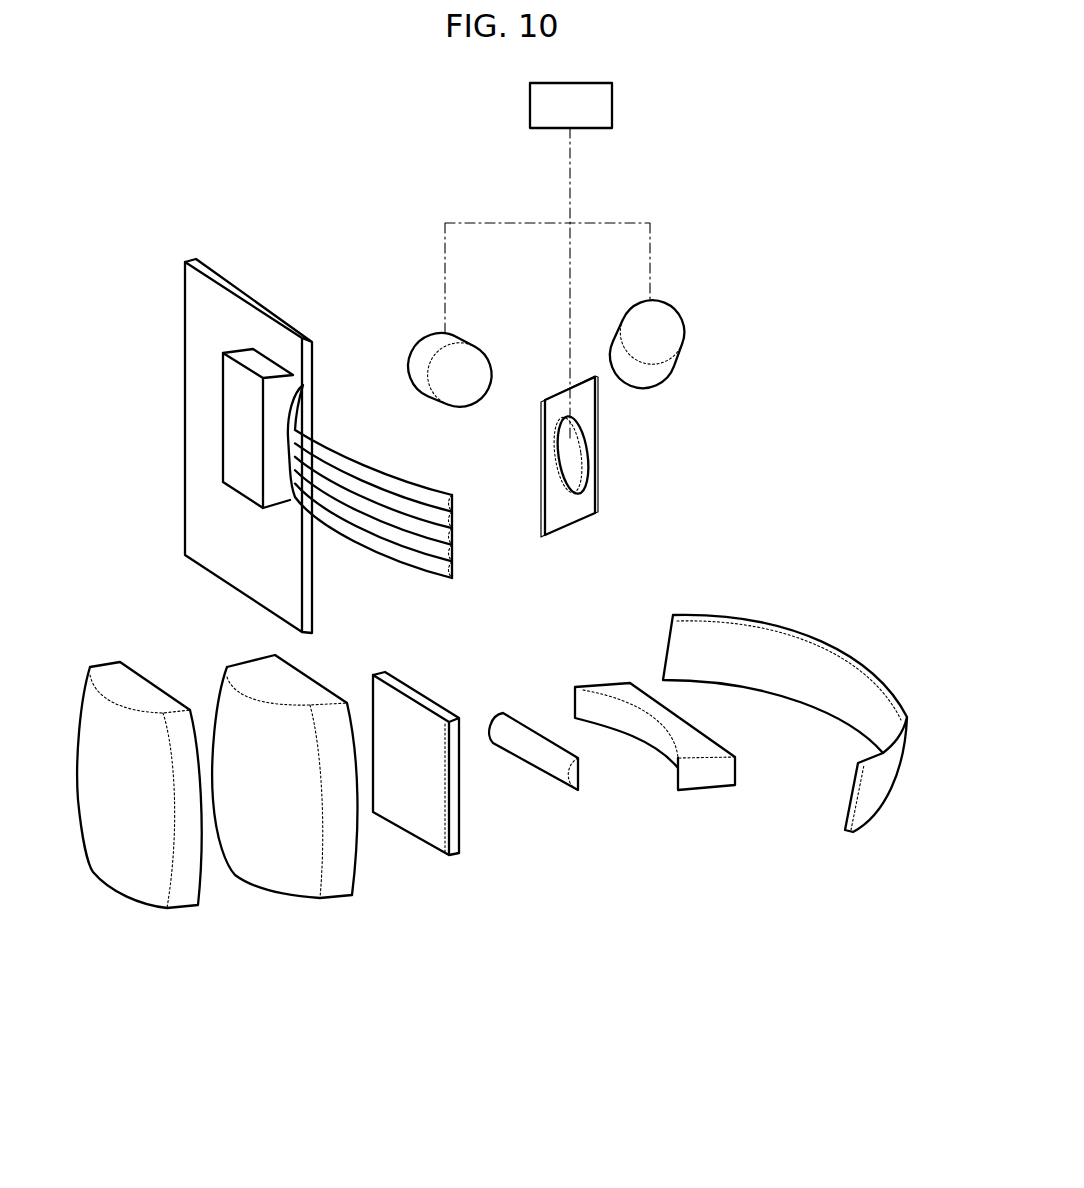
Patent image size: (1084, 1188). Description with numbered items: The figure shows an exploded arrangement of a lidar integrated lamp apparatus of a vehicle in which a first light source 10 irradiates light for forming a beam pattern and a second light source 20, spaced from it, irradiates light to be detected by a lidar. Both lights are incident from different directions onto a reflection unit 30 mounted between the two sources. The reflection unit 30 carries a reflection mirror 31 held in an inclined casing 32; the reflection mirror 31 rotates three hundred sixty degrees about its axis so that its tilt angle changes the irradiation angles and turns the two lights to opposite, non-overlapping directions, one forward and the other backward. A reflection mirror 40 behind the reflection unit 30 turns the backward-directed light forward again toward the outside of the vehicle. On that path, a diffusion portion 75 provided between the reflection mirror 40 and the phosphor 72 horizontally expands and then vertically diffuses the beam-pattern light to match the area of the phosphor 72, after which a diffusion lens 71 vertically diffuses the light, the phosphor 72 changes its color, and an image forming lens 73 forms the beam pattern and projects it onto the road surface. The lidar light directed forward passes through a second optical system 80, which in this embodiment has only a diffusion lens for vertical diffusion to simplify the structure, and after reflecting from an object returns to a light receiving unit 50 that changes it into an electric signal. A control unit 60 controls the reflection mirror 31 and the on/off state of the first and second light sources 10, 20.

The first light source 10 is at (668, 330).
The second light source 20 is at (424, 345).
The reflection unit 30 is at (605, 432).
The reflection mirror 31 is at (572, 477).
The casing 32 is at (593, 455).
The reflection mirror 40 is at (870, 808).
The light receiving unit 50 is at (242, 417).
The control unit 60 is at (607, 108).
The diffusion lens 71 is at (540, 765).
The phosphor 72 is at (420, 822).
The image forming lens 73 is at (180, 890).
The diffusion portion 75 is at (707, 780).
The second optical system 80 is at (315, 483).